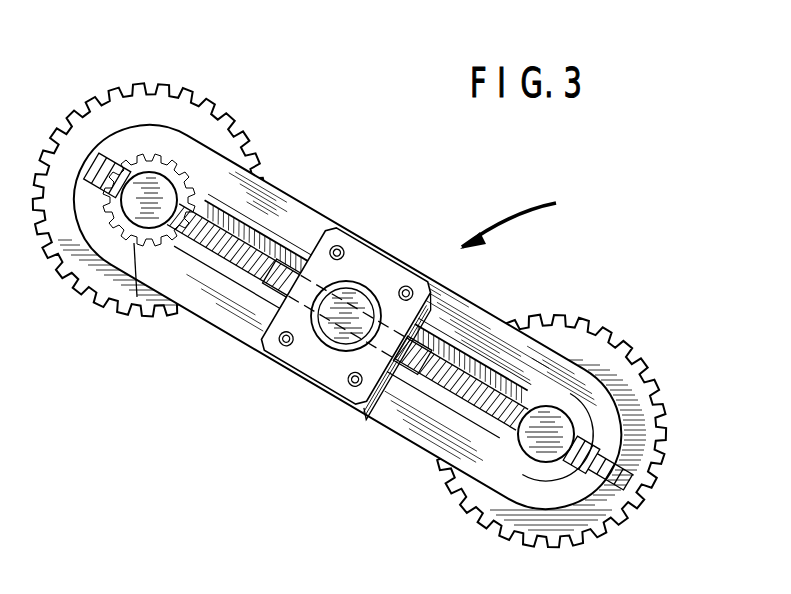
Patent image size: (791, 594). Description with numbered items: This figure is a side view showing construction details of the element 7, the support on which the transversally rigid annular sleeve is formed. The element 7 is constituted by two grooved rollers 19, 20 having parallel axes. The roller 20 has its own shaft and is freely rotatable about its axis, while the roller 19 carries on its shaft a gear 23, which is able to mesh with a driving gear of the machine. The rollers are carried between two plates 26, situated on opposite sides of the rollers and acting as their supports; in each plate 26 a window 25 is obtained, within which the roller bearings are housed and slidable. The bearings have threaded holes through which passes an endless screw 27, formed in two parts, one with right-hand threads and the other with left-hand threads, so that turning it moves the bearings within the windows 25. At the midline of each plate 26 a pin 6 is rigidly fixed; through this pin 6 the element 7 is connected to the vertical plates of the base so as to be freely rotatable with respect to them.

The pin 6 is at (355, 302).
The element 7 is at (516, 218).
The grooved roller 19 is at (192, 112).
The grooved roller 20 is at (658, 433).
The gear 23 is at (138, 318).
The window 25 is at (528, 395).
The plate 26 is at (470, 316).
The endless screw 27 is at (243, 210).